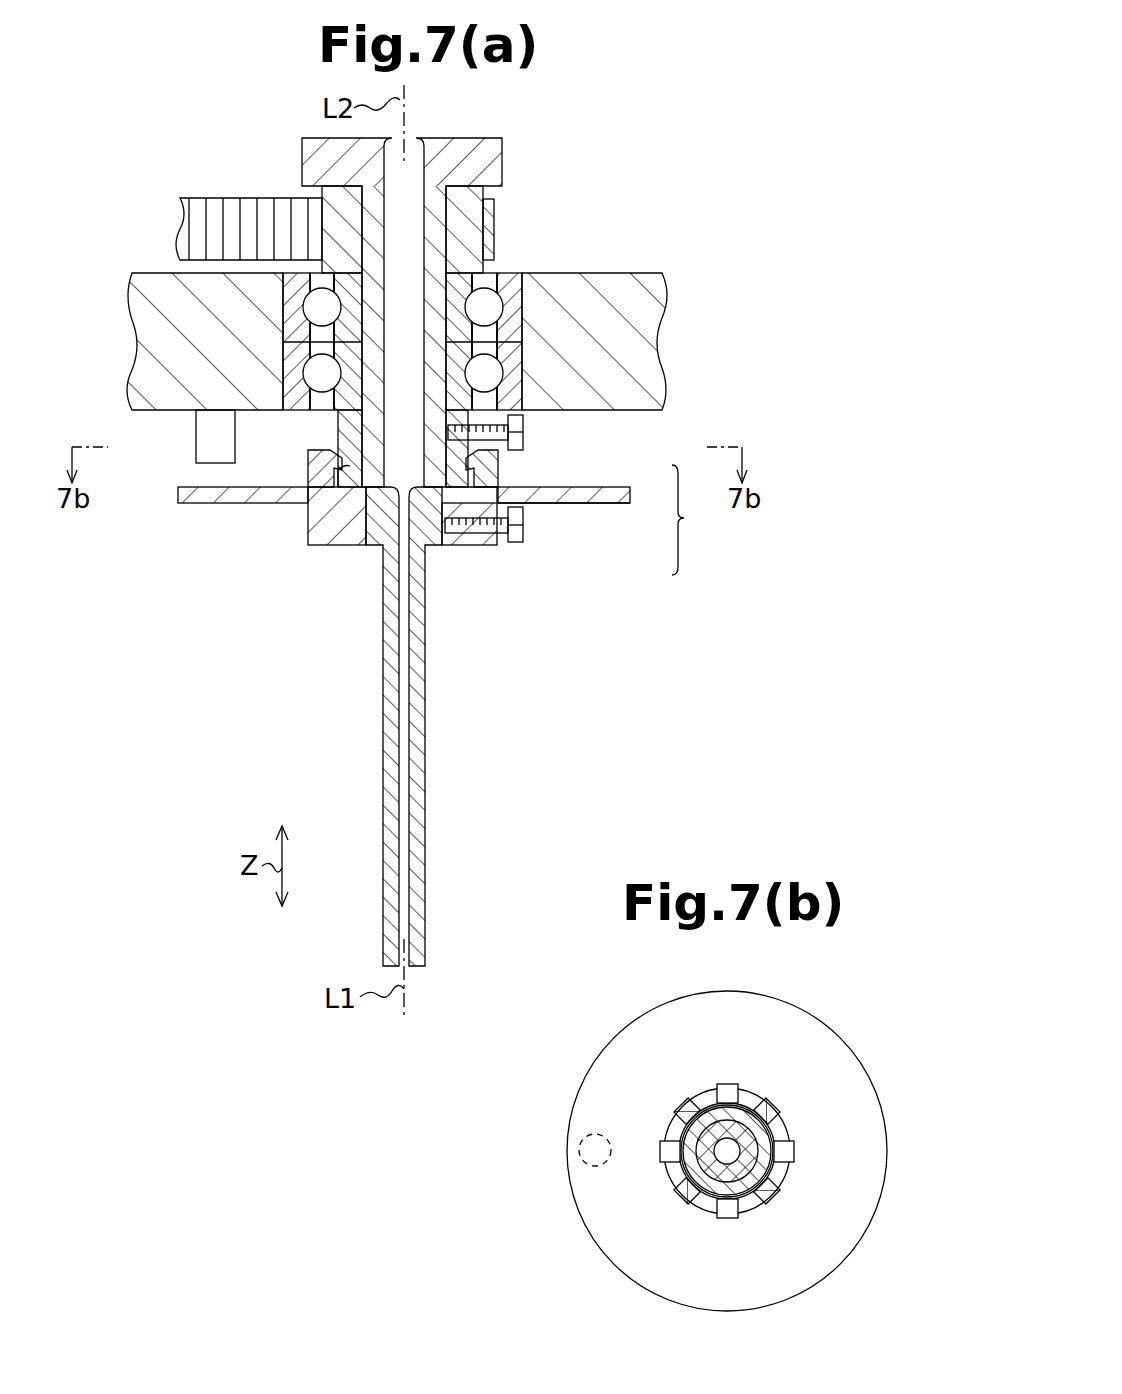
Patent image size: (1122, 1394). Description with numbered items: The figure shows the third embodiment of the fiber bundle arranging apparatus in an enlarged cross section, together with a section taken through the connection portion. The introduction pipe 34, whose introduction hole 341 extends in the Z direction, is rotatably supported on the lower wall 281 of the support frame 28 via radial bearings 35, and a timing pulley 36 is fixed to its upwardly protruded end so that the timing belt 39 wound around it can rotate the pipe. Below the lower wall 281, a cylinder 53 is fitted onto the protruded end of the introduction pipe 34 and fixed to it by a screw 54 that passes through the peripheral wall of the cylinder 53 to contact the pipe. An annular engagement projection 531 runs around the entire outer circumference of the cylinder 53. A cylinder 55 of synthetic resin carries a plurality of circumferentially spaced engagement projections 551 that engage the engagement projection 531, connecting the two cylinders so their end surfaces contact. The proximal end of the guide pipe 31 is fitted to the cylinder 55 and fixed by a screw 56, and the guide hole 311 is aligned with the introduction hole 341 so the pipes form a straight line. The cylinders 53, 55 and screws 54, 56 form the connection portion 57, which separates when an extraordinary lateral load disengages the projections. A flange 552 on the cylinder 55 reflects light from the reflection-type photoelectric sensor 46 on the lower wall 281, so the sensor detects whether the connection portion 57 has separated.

In FIG. 7A, the introduction pipe 34 is at (495, 154).
In FIG. 7B, the introduction pipe 34 is at (748, 1160).
In FIG. 7A, the introduction hole 341 is at (412, 153).
In FIG. 7B, the introduction hole 341 is at (722, 1158).
In FIG. 7A, the timing pulley 36 is at (483, 224).
In FIG. 7A, the timing belt 39 is at (216, 205).
In FIG. 7A, the lower wall 281 is at (468, 341).
In FIG. 7A, the support frame 28 is at (663, 302).
In FIG. 7A, the radial bearings 35 is at (494, 372).
In FIG. 7A, the photoelectric sensor 46 is at (197, 441).
In FIG. 7B, the photoelectric sensor 46 is at (581, 1160).
In FIG. 7A, the cylinder 53 is at (462, 535).
In FIG. 7B, the cylinder 53 is at (727, 1214).
In FIG. 7A, the engagement projection 531 is at (337, 462).
In FIG. 7B, the engagement projection 531 is at (711, 1092).
In FIG. 7A, the engagement projections 551 is at (309, 465).
In FIG. 7B, the engagement projections 551 is at (766, 1105).
In FIG. 7A, the flange 552 is at (193, 500).
In FIG. 7B, the flange 552 is at (815, 1028).
In FIG. 7A, the screw 54 is at (523, 430).
In FIG. 7A, the cylinder 55 is at (477, 540).
In FIG. 7B, the cylinder 55 is at (727, 1085).
In FIG. 7A, the screw 56 is at (510, 518).
In FIG. 7A, the connection portion 57 is at (699, 520).
In FIG. 7A, the guide pipe 31 is at (391, 703).
In FIG. 7A, the guide hole 311 is at (402, 636).